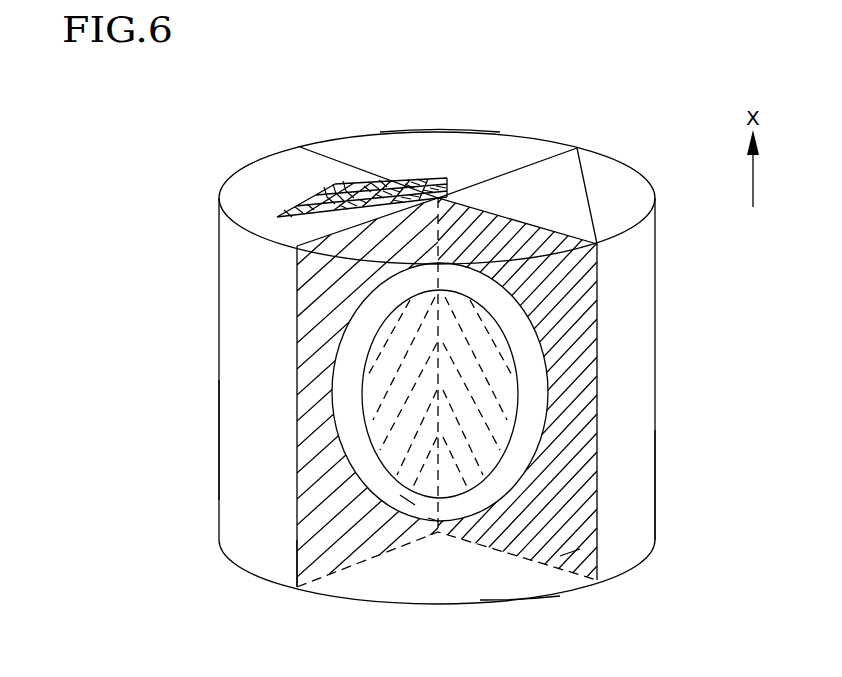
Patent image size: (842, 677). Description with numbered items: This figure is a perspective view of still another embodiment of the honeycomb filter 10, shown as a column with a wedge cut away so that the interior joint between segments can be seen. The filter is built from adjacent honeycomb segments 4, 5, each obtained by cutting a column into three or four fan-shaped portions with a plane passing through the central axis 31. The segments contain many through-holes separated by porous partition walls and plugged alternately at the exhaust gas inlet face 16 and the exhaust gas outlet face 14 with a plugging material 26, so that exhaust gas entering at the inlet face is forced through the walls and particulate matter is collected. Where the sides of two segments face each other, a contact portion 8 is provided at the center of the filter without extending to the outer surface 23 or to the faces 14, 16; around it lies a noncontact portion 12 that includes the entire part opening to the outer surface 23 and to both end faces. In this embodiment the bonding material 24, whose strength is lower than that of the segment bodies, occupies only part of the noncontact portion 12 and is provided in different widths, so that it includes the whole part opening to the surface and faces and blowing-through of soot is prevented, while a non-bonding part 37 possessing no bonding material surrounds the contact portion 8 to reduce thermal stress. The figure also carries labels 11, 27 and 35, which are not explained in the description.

The honeycomb filter 10 is at (569, 117).
The honeycomb segment 4 is at (605, 173).
The exhaust gas outlet face 14 is at (443, 150).
The cells 11 is at (352, 188).
The plugging material 26 is at (307, 200).
The noncontact portion 12 is at (303, 323).
The non-bonding part 37 is at (503, 306).
The contact portion 8 is at (473, 378).
The honeycomb segment 5 is at (228, 455).
The outer surface 23 is at (640, 510).
The exhaust gas inlet face 16 is at (513, 592).
The bonding material 24 is at (568, 555).
The inner peripheral surface 27 is at (412, 502).
The central axis 31 is at (433, 521).
The cut edge 35 is at (300, 546).